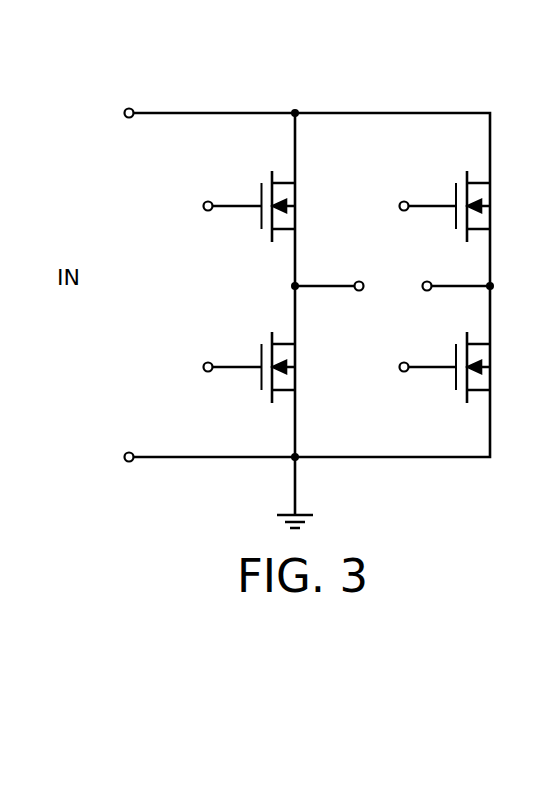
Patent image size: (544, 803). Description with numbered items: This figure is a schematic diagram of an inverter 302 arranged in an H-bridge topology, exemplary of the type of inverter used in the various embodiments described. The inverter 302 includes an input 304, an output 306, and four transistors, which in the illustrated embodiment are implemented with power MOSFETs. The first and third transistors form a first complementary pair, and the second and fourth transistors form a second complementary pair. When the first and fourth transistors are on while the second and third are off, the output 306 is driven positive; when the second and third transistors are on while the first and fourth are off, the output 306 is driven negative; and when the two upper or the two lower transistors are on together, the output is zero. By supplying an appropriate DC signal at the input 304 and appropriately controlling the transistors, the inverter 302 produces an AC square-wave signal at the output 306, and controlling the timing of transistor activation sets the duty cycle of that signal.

The inverter 302 is at (141, 552).
The input 304 is at (129, 108).
The output 306 is at (428, 291).